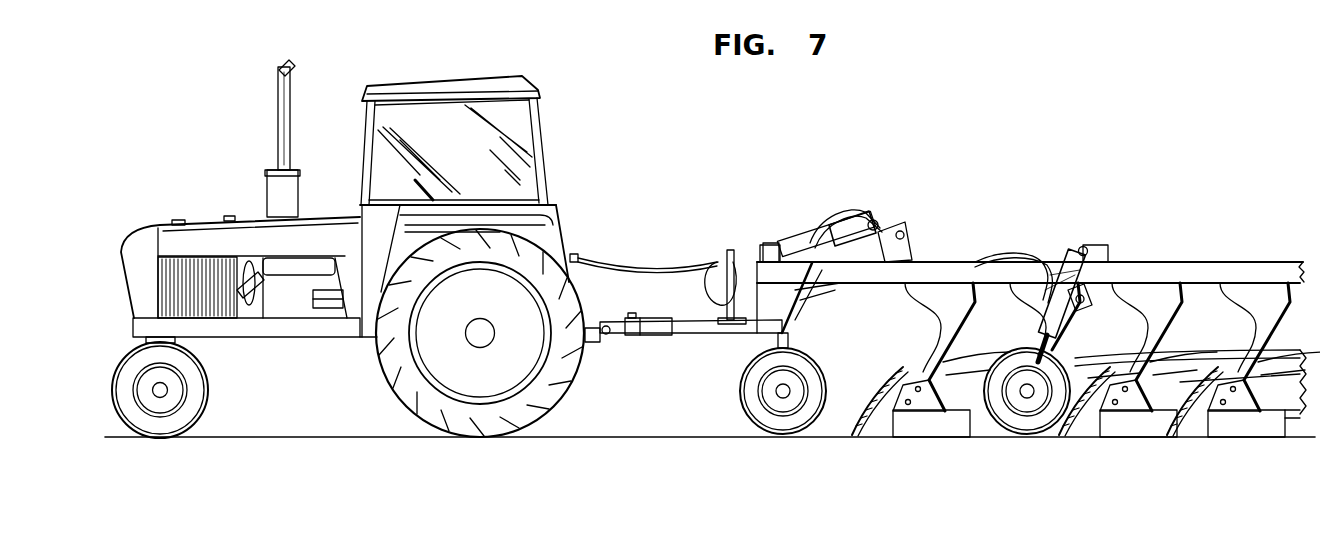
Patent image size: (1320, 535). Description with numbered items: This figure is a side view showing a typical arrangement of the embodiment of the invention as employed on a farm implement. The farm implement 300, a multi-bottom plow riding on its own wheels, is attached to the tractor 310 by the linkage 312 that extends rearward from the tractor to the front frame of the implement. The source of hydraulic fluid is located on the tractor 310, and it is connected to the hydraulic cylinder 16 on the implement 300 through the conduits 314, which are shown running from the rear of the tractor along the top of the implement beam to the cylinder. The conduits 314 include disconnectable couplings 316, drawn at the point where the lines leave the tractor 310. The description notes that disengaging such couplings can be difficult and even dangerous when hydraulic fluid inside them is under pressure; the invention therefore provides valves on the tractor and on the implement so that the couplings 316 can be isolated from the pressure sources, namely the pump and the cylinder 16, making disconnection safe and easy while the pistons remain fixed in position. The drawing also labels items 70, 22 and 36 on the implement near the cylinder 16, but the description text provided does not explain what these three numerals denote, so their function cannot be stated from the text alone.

The tractor 310 is at (236, 178).
The farm implement 300 is at (1170, 226).
The linkage 312 is at (636, 338).
The conduits 314 is at (669, 262).
The disconnectable couplings 316 is at (576, 258).
The hydraulic cylinder 70 is at (1063, 246).
The pivot bracket 22 is at (1082, 249).
The hydraulic cylinder 16 is at (1086, 281).
The shank 36 is at (1035, 336).